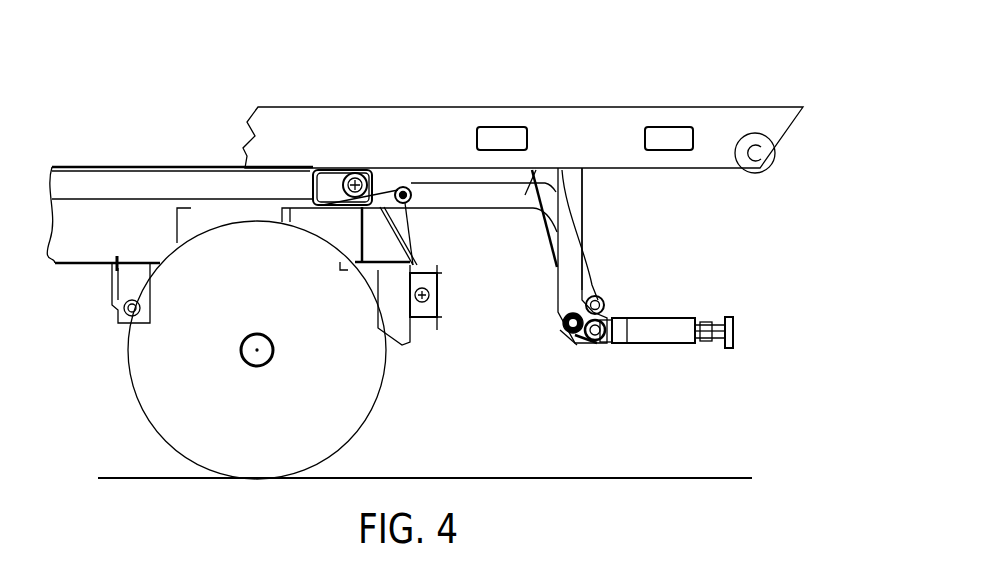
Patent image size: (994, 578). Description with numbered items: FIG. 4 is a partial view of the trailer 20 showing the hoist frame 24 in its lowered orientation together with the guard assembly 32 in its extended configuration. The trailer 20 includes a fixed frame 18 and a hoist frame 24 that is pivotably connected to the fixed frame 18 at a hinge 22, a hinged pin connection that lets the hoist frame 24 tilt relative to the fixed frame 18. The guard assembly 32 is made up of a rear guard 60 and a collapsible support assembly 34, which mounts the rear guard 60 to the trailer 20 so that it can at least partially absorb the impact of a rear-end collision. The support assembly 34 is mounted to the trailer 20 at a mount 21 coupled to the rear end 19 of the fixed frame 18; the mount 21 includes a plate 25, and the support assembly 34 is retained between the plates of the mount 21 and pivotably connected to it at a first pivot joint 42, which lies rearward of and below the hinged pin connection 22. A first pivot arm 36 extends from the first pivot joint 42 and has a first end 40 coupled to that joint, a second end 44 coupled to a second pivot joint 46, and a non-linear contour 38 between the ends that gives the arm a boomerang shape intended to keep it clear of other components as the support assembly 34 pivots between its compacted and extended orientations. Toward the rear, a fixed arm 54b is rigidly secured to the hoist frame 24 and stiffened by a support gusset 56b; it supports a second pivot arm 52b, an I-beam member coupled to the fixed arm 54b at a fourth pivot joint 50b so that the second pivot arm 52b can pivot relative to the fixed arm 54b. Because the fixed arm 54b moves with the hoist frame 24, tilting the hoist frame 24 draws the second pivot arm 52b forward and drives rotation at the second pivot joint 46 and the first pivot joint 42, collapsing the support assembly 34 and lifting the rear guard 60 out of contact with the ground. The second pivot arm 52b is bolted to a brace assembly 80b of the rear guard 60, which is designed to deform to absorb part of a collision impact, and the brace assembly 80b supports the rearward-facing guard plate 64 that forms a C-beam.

The fixed frame 18 is at (178, 185).
The rear end 19 is at (317, 95).
The trailer 20 is at (170, 125).
The mount 21 is at (420, 238).
The hinge 22 is at (352, 172).
The hoist frame 24 is at (630, 66).
The plate 25 is at (402, 213).
The guard assembly 32 is at (545, 353).
The support assembly 34 is at (552, 300).
The first pivot arm 36 is at (515, 195).
The non-linear contour 38 is at (533, 220).
The first end 40 is at (421, 190).
The first pivot joint 42 is at (400, 185).
The second end 44 is at (592, 280).
The second pivot joint 46 is at (605, 307).
The fourth pivot joint 50b is at (595, 345).
The second pivot arm 52b is at (670, 326).
The fixed arm 54b is at (586, 180).
The support gusset 56b is at (548, 180).
The rear guard 60 is at (735, 360).
The guard plate 64 is at (735, 328).
The brace assembly 80b is at (708, 352).